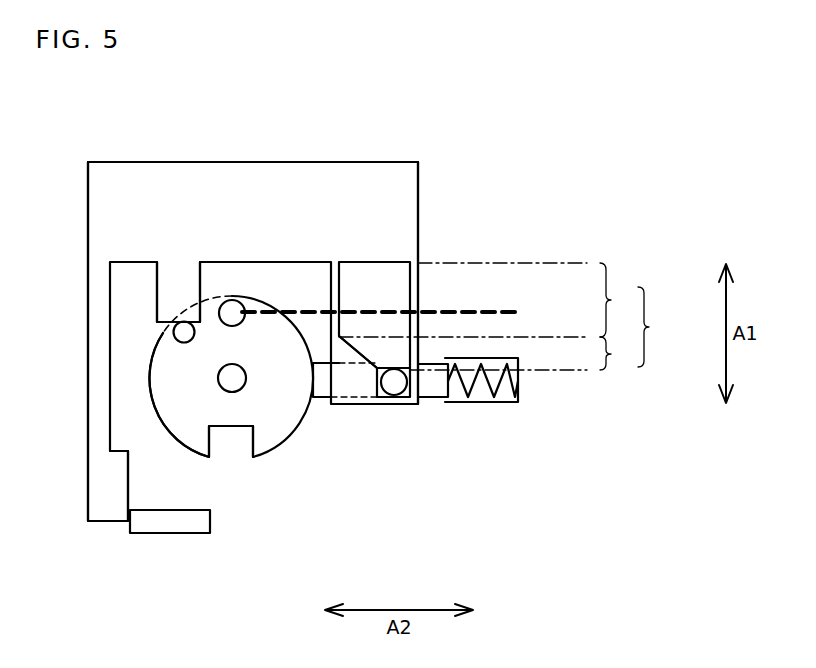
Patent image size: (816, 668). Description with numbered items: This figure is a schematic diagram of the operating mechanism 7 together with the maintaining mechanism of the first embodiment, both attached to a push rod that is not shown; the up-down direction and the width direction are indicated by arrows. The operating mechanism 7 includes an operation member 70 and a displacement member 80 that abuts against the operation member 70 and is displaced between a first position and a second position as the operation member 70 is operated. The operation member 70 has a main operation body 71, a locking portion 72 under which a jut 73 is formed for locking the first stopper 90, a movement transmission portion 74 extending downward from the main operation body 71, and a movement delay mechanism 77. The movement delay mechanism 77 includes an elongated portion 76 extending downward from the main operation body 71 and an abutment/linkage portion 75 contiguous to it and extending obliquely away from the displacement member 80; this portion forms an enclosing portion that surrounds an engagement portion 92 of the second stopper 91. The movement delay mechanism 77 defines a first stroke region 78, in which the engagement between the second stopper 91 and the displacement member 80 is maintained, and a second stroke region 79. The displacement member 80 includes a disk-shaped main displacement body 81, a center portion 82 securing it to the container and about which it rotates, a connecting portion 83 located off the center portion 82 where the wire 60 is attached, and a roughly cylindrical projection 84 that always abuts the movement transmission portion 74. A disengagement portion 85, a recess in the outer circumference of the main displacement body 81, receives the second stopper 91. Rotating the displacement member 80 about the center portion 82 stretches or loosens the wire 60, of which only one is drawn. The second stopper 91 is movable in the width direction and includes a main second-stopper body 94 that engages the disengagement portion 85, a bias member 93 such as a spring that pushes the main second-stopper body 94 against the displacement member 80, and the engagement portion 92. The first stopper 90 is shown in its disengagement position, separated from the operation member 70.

The operating mechanism 7 is at (392, 142).
The wire 60 is at (487, 310).
The operation member 70 is at (202, 161).
The main operation body 71 is at (138, 185).
The locking portion 72 is at (98, 398).
The jut 73 is at (120, 448).
The movement transmission portion 74 is at (176, 293).
The abutment/linkage portion 75 is at (360, 352).
The elongated portion 76 is at (337, 292).
The movement delay mechanism 77 is at (657, 327).
The first stroke region 78 is at (618, 300).
The second stroke region 79 is at (618, 353).
The displacement member 80 is at (277, 449).
The main displacement body 81 is at (167, 377).
The center portion 82 is at (232, 378).
The connecting portion 83 is at (232, 312).
The projection 84 is at (174, 332).
The disengagement portion 85 is at (228, 429).
The first stopper 90 is at (170, 525).
The second stopper 91 is at (433, 398).
The engagement portion 92 is at (392, 383).
The bias member 93 is at (494, 396).
The main second-stopper body 94 is at (323, 388).